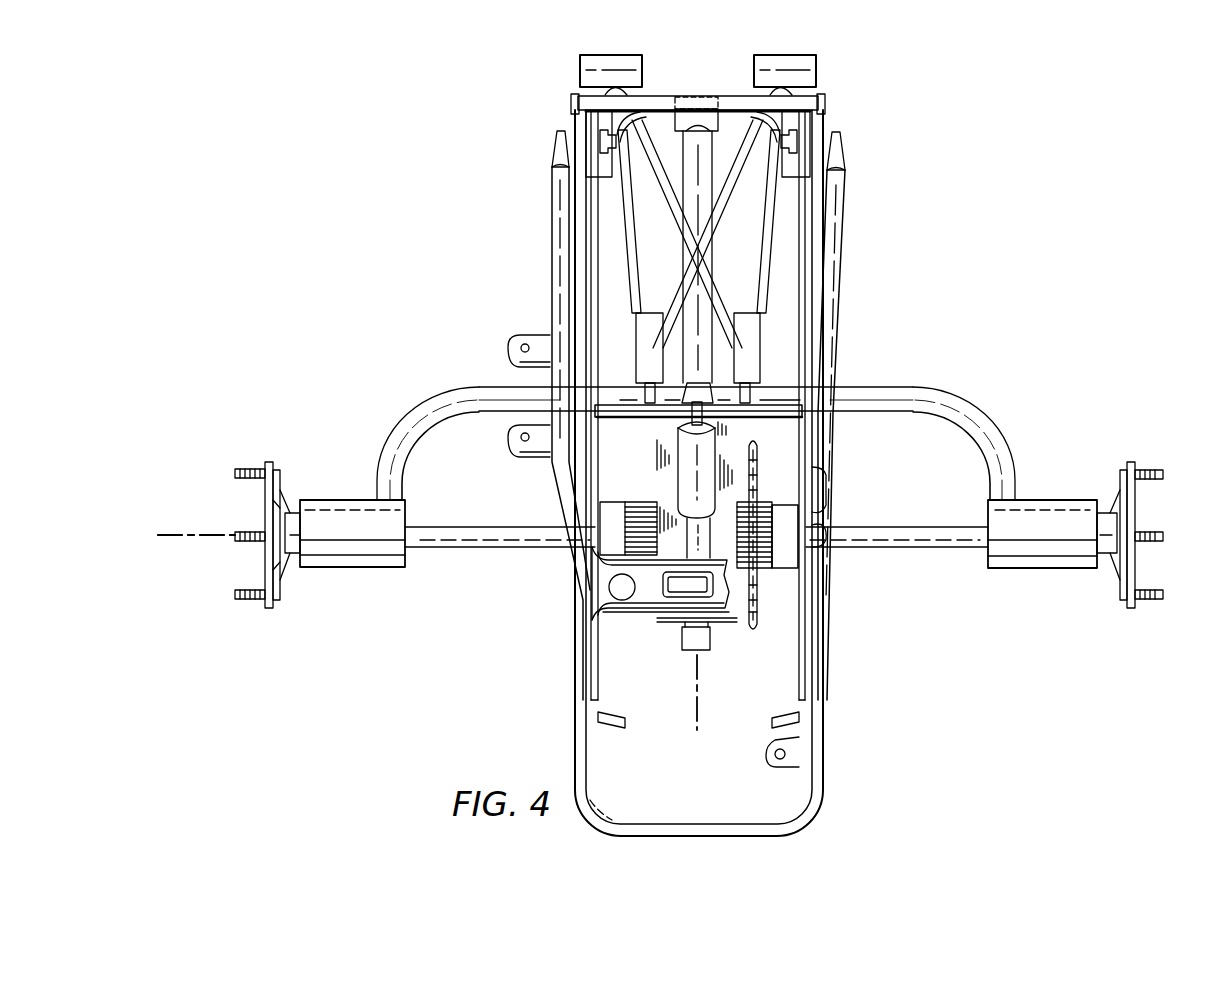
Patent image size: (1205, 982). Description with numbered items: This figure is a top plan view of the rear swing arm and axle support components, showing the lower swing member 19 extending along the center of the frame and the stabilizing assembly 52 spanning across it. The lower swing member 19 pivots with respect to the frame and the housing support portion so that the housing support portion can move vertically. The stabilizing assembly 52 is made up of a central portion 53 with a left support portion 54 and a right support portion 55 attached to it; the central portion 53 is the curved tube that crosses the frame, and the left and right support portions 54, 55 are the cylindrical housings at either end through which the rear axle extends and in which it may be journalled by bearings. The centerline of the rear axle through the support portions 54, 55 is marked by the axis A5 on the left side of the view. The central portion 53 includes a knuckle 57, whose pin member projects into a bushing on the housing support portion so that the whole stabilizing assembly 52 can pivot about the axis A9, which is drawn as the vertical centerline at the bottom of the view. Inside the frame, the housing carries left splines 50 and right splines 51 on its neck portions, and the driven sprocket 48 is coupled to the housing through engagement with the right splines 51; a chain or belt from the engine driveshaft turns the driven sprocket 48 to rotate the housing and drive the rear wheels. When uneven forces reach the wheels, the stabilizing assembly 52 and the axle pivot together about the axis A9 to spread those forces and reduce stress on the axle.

The lower swing member 19 is at (683, 157).
The knuckle 57 is at (704, 385).
The stabilizing assembly 52 is at (699, 411).
The central portion 53 is at (400, 432).
The left support portion 54 is at (354, 567).
The right support portion 55 is at (1045, 567).
The left splines 50 is at (640, 500).
The right splines 51 is at (765, 500).
The driven sprocket 48 is at (762, 611).
The axle axis A5 is at (164, 532).
The pivot axis A9 is at (696, 709).